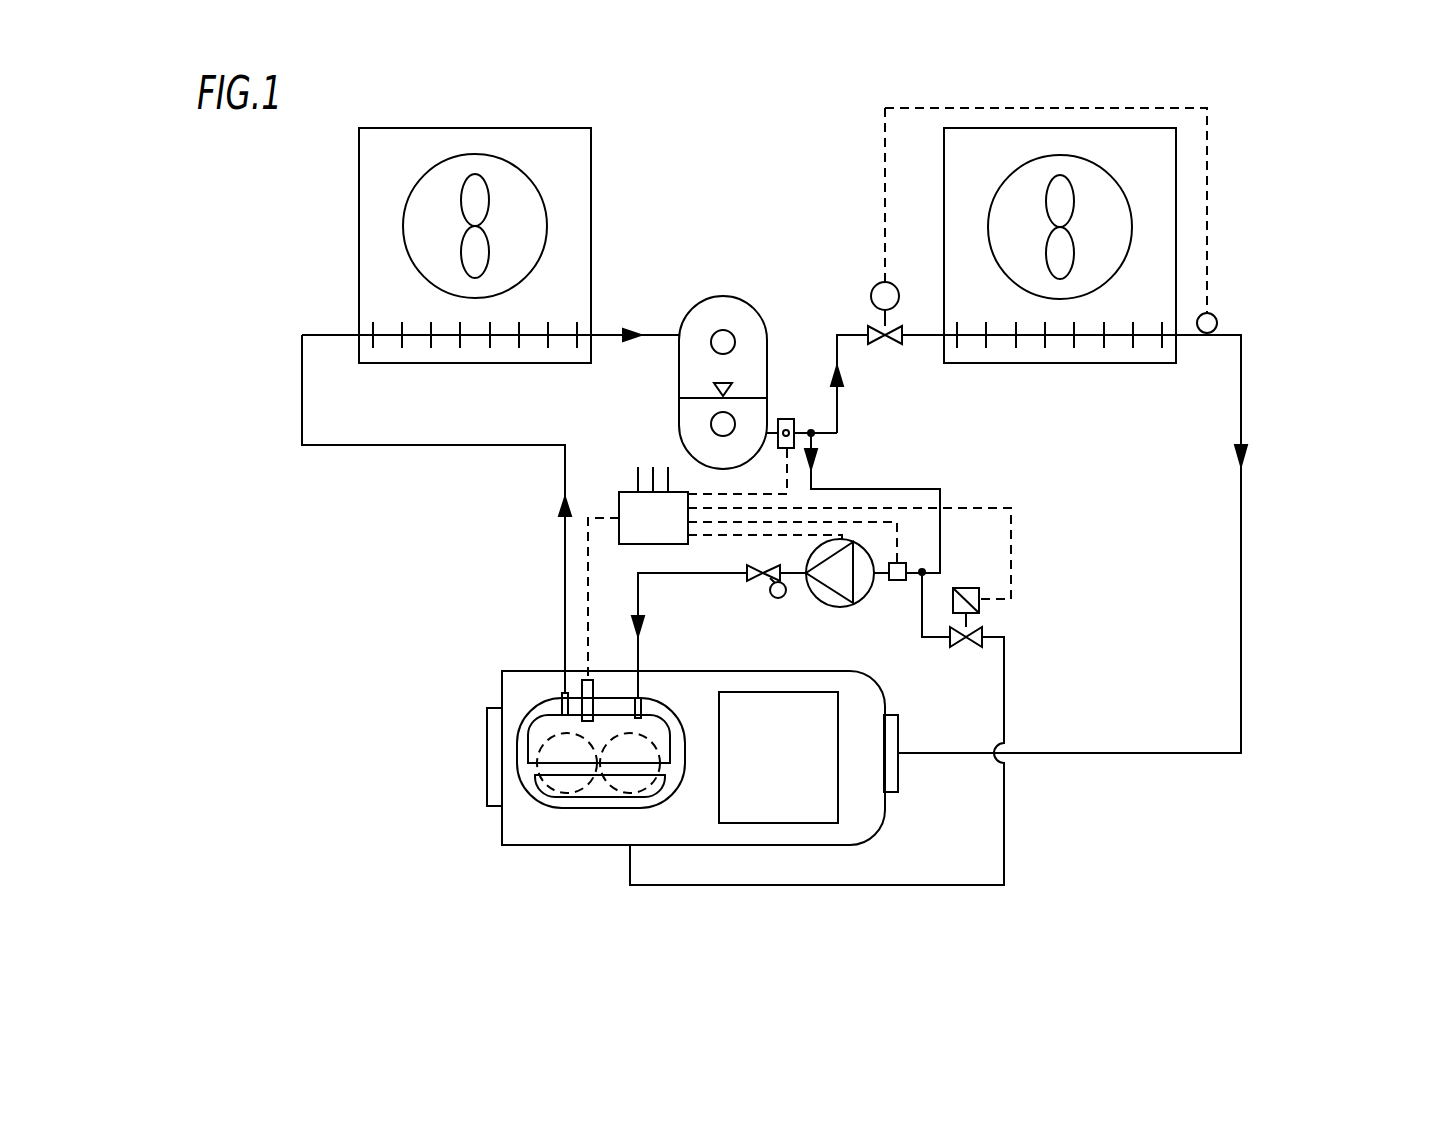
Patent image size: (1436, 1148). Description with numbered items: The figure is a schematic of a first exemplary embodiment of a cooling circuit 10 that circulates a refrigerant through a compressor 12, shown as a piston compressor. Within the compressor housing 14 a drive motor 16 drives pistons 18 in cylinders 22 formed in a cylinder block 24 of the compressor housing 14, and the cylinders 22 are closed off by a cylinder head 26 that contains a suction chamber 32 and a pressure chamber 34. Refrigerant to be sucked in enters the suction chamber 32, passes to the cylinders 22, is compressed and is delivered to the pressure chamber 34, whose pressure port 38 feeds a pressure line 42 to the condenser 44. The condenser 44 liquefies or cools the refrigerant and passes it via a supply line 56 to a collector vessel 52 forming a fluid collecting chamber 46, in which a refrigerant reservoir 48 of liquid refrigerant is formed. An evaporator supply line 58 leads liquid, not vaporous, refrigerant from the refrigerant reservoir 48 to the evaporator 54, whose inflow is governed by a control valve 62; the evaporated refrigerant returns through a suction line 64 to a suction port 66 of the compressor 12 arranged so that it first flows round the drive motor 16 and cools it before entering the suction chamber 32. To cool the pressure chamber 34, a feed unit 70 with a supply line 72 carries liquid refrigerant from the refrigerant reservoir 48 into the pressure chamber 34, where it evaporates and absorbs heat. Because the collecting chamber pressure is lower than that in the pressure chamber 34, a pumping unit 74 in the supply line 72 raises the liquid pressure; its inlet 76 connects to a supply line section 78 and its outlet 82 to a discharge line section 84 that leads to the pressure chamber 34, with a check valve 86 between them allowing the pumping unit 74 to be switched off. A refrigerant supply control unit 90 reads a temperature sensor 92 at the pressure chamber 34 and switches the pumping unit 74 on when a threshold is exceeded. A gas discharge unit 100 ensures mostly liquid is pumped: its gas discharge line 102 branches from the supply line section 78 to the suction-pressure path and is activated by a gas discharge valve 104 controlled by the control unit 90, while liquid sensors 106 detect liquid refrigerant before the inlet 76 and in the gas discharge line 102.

The cooling circuit 10 is at (1326, 193).
The compressor 12 is at (818, 860).
The compressor housing 14 is at (756, 860).
The drive motor 16 is at (818, 802).
The pistons 18 is at (622, 788).
The cylinders 22 is at (545, 752).
The cylinder block 24 is at (598, 788).
The cylinder head 26 is at (528, 773).
The suction chamber 32 is at (660, 782).
The pressure chamber 34 is at (547, 725).
The pressure port 38 is at (555, 707).
The pressure line 42 is at (565, 535).
The condenser 44 is at (549, 147).
The fluid collecting chamber 46 is at (703, 322).
The refrigerant reservoir 48 is at (688, 418).
The collector vessel 52 is at (753, 296).
The evaporator 54 is at (1140, 155).
The supply line 56 is at (637, 333).
The evaporator supply line 58 is at (837, 408).
The control valve 62 is at (885, 346).
The suction line 64 is at (1241, 555).
The suction port 66 is at (898, 755).
The feed unit 70 is at (955, 480).
The supply line 72 is at (940, 533).
The pumping unit 74 is at (840, 606).
The inlet 76 is at (882, 560).
The supply line section 78 is at (930, 489).
The outlet 82 is at (793, 576).
The discharge line section 84 is at (704, 575).
The check valve 86 is at (770, 582).
The refrigerant supply control unit 90 is at (628, 500).
The temperature sensor 92 is at (598, 680).
The gas discharge unit 100 is at (1020, 672).
The gas discharge line 102 is at (1004, 715).
The gas discharge valve 104 is at (962, 648).
The liquid sensor 106 is at (786, 419).